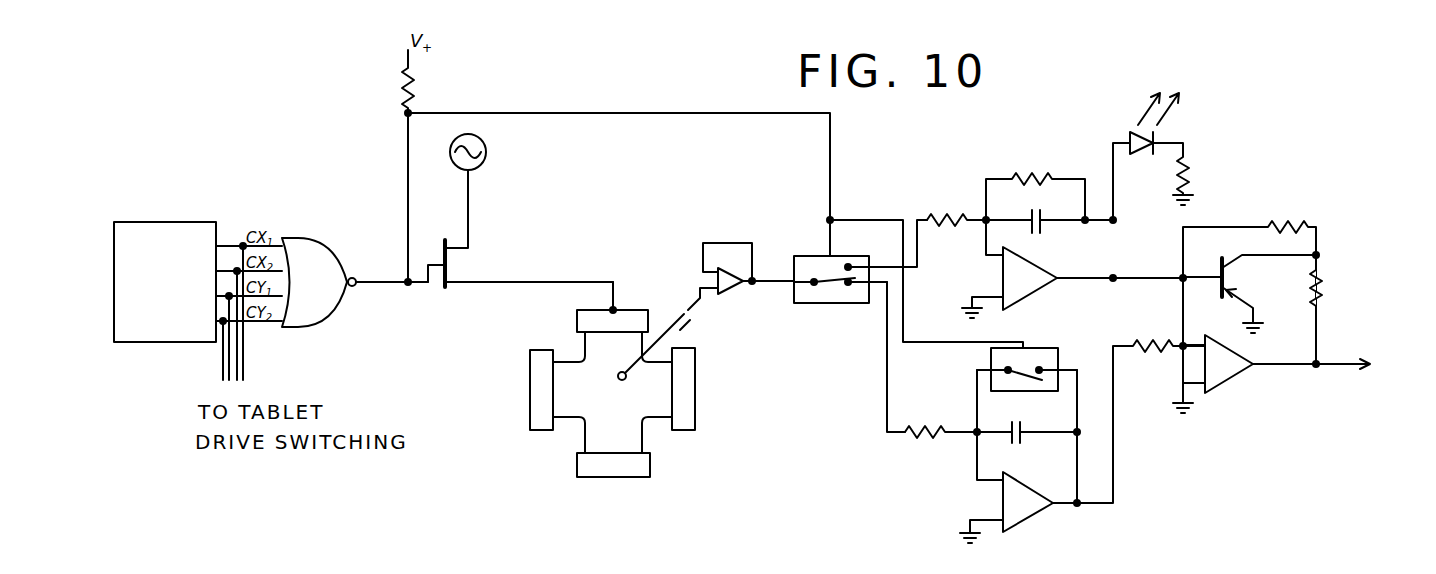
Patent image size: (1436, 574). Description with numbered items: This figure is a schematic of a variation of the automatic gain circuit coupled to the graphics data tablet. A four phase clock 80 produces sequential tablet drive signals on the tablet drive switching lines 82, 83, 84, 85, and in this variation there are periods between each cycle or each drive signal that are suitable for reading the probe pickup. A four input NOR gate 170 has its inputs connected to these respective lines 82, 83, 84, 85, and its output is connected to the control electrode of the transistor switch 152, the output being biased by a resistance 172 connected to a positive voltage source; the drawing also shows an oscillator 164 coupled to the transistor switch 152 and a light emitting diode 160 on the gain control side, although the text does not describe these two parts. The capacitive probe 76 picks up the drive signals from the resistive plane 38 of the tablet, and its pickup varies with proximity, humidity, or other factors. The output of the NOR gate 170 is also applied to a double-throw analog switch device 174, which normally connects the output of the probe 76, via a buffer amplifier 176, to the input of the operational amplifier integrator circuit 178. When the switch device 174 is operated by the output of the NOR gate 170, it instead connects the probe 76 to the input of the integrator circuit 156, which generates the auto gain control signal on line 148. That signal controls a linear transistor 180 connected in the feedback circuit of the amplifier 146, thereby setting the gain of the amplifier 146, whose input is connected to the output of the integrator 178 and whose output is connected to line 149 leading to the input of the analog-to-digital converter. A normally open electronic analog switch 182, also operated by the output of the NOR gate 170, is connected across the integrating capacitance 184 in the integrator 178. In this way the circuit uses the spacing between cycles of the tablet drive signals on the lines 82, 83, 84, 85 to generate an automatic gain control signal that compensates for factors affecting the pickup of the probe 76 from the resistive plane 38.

The graphic tablet 38 is at (650, 373).
The stylus coupling capacitor 76 is at (697, 307).
The four phase clock 80 is at (174, 222).
The clock phase line CY2 82 is at (238, 368).
The clock phase line CX1 83 is at (243, 348).
The clock phase line CY1 84 is at (228, 352).
The clock phase line CX2 85 is at (222, 372).
The output amplifier 146 is at (1228, 382).
The amplifier 148 is at (1113, 250).
The output signal 149 is at (1340, 364).
The field effect transistor 152 is at (447, 258).
The feedback capacitor 156 is at (1020, 238).
The light emitting diode 160 is at (1132, 149).
The oscillator 164 is at (484, 163).
The NOR gate 170 is at (306, 238).
The pull-up resistor 172 is at (418, 85).
The switch 174 is at (803, 256).
The buffer amplifier 176 is at (713, 278).
The integrating amplifier 178 is at (1045, 476).
The transistor 180 is at (1230, 276).
The reset switch 182 is at (1025, 365).
The integrating capacitor 184 is at (1027, 443).